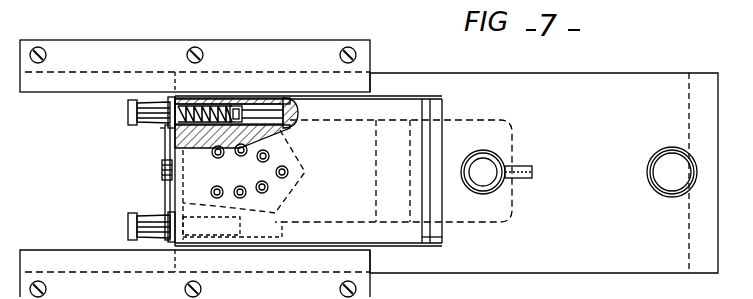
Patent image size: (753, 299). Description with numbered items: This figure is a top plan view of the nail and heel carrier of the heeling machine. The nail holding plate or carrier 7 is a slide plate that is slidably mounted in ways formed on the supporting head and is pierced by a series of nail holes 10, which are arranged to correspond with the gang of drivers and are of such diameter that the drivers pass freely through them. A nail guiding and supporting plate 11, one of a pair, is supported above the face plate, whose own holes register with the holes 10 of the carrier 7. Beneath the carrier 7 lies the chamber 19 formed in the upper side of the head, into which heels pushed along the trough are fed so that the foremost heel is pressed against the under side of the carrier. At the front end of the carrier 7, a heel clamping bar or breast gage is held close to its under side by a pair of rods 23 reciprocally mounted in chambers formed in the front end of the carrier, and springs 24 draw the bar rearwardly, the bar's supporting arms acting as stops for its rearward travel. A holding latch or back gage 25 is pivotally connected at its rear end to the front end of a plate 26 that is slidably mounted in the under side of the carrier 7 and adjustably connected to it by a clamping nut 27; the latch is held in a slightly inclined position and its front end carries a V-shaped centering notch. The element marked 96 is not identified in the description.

The nail holding plate or carrier 7 is at (621, 82).
The nail holes 10 is at (211, 192).
The nail guiding and supporting plate 11 is at (164, 150).
The chamber 19 is at (170, 132).
The rods 23 is at (128, 110).
The springs 24 is at (165, 138).
The holding latch or back gage 25 is at (352, 120).
The plate 26 is at (470, 120).
The clamping nut 27 is at (495, 165).
The guide strip 96 is at (443, 238).